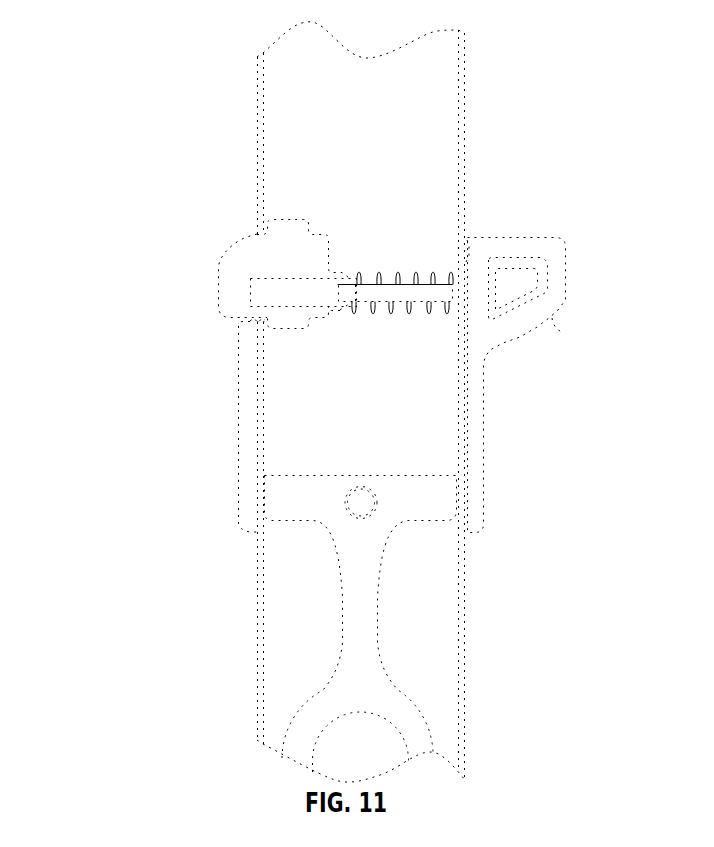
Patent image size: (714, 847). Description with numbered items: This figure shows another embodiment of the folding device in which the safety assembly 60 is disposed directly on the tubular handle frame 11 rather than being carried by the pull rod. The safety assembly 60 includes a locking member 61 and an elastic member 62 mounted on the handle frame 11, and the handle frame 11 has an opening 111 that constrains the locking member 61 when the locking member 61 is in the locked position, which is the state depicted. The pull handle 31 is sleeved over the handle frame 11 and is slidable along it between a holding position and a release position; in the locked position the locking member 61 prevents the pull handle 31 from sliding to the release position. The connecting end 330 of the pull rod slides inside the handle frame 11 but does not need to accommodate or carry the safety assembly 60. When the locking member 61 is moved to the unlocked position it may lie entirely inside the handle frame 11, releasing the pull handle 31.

The handle frame 11 is at (467, 623).
The opening 111 is at (247, 318).
The safety assembly 60 is at (190, 322).
The locking member 61 is at (283, 265).
The elastic member 62 is at (395, 283).
The pull handle 31 is at (488, 417).
The connecting end 330 is at (297, 497).